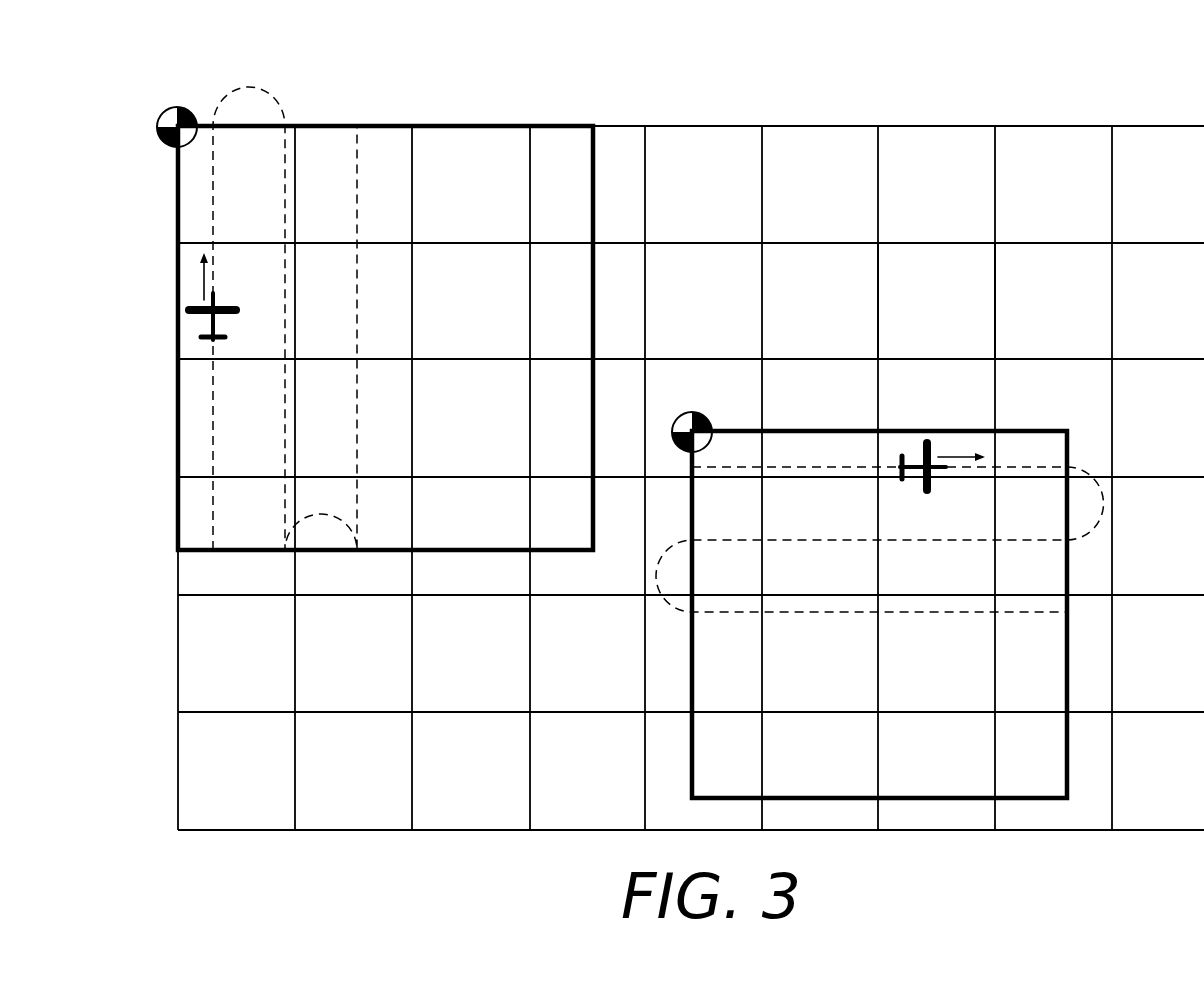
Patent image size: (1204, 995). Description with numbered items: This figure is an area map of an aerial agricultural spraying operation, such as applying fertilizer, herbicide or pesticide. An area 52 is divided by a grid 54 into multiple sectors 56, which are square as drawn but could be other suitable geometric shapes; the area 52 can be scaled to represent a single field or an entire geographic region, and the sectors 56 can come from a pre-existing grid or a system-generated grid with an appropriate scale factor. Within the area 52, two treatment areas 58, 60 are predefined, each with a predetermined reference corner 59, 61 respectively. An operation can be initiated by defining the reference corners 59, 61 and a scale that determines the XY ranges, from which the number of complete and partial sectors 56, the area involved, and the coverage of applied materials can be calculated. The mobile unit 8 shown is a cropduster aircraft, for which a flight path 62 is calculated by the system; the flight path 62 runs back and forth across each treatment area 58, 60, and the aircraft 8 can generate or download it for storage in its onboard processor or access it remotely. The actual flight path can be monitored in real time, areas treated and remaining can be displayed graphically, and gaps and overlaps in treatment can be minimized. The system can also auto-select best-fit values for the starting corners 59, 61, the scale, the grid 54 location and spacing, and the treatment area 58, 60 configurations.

The mobile unit 8 is at (222, 306).
The area 52 is at (1097, 101).
The grid 54 is at (994, 296).
The sectors 56 is at (860, 165).
The treatment area 58 is at (593, 555).
The reference corner 59 is at (166, 108).
The treatment area 60 is at (1072, 398).
The reference corner 61 is at (688, 412).
The flight path 62 is at (286, 441).